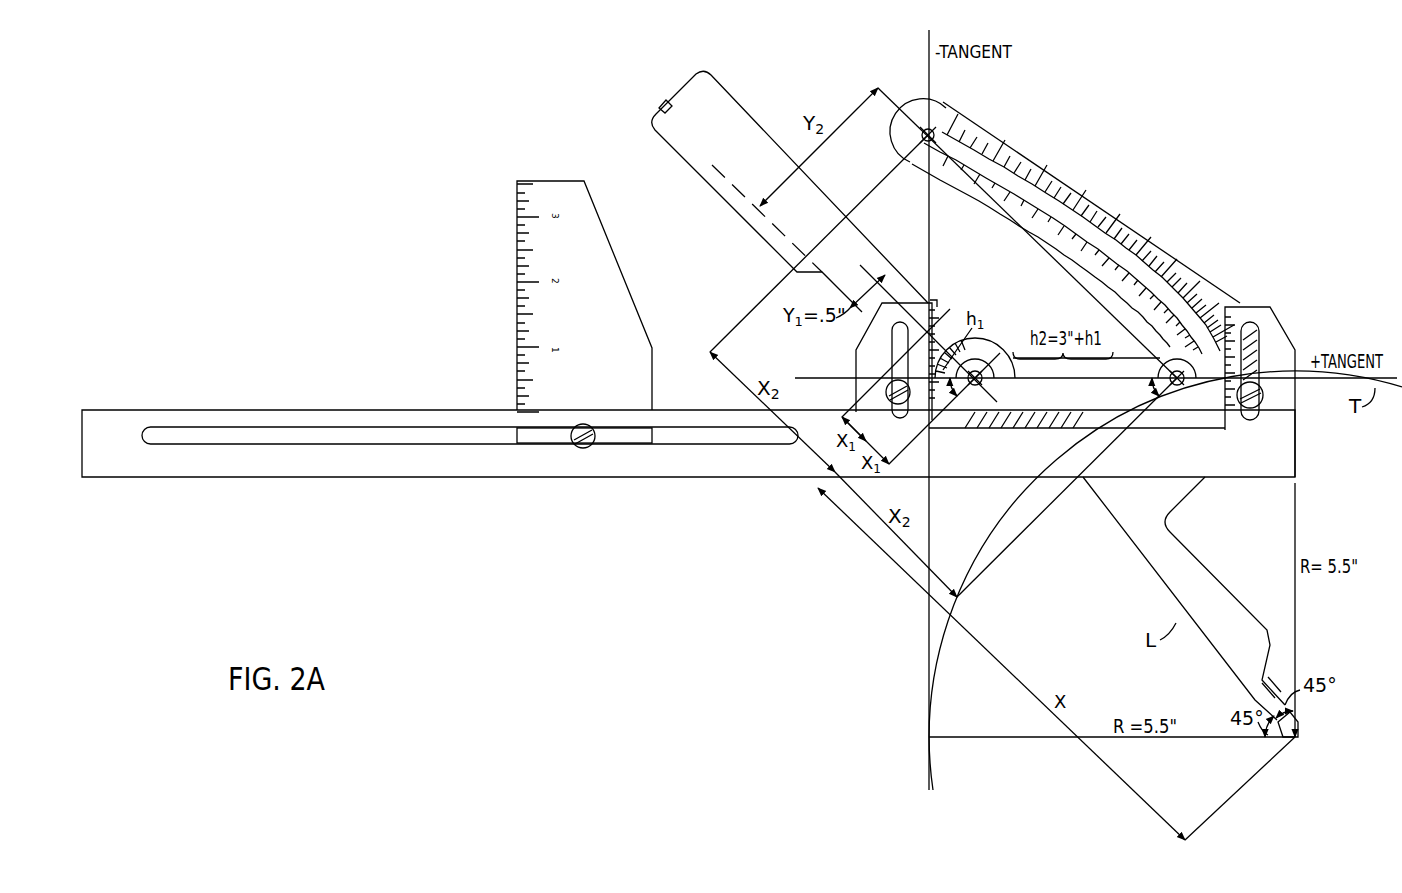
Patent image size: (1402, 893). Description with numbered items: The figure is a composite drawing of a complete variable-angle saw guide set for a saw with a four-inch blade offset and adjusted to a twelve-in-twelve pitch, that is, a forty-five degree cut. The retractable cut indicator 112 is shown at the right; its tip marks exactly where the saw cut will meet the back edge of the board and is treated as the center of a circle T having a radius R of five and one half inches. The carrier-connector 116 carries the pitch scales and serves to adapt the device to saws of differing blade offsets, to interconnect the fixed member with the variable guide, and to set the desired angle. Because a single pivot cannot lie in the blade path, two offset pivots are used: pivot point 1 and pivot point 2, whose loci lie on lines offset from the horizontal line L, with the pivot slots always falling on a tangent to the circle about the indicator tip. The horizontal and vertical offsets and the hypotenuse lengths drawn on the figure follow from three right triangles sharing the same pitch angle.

The retractable cut indicator 112 is at (1300, 730).
The carrier-connector 116 is at (1016, 368).
The pivot point 1 is at (973, 383).
The pivot point 2 is at (1175, 383).